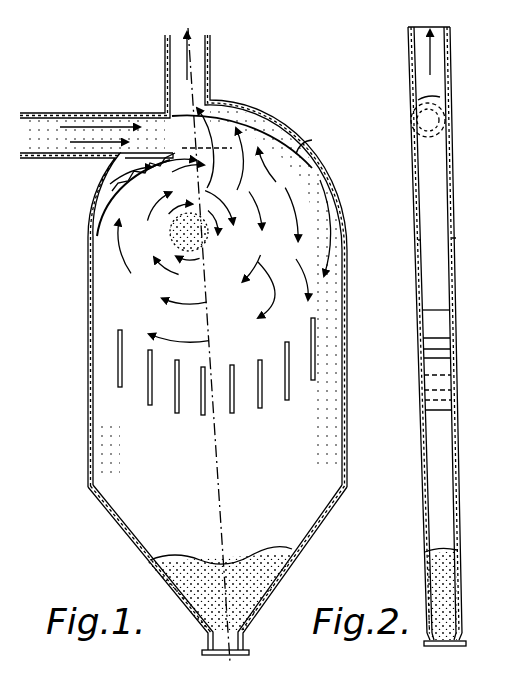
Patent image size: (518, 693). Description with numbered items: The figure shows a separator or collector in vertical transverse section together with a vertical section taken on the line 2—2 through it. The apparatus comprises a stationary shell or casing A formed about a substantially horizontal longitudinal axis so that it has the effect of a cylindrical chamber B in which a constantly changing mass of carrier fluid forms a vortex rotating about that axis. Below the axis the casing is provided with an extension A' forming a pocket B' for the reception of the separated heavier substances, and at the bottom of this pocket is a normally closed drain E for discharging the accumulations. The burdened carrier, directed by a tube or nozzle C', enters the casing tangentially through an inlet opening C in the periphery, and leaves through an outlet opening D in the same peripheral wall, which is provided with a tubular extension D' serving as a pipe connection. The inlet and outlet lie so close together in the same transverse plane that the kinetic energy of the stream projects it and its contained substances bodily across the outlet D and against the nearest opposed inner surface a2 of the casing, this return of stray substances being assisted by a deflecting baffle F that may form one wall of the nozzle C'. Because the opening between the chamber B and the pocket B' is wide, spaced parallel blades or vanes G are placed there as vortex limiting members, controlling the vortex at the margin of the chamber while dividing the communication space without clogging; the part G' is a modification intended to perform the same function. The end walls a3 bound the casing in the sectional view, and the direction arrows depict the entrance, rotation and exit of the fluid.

In FIG. 1, the shell or casing A is at (183, 261).
In FIG. 2, the shell or casing A is at (412, 330).
In FIG. 1, the extension of the casing A' is at (235, 546).
In FIG. 2, the extension of the casing A' is at (413, 541).
In FIG. 1, the opposed inner wall surface of the casing a2 is at (298, 153).
In FIG. 2, the side walls of casing a3 is at (418, 238).
In FIG. 1, the cylindrical chamber B is at (224, 250).
In FIG. 2, the cylindrical chamber B is at (455, 286).
In FIG. 1, the pocket B' is at (177, 450).
In FIG. 1, the inlet opening C is at (178, 153).
In FIG. 2, the inlet opening C is at (412, 116).
In FIG. 1, the tube or nozzle C' is at (97, 123).
In FIG. 1, the outlet opening D is at (236, 131).
In FIG. 2, the outlet opening D is at (452, 85).
In FIG. 1, the tubular extension D' is at (213, 56).
In FIG. 2, the tubular extension D' is at (458, 52).
In FIG. 1, the drain or opening E is at (240, 641).
In FIG. 2, the drain or opening E is at (465, 640).
In FIG. 1, the deflecting surface or baffle F is at (108, 190).
In FIG. 1, the vortex limiting members G is at (216, 374).
In FIG. 2, the vortex limiting members G is at (458, 364).
In FIG. 2, the vortex limiting member G' is at (470, 384).
In FIG. 1, the section line 2— 2 is at (213, 348).